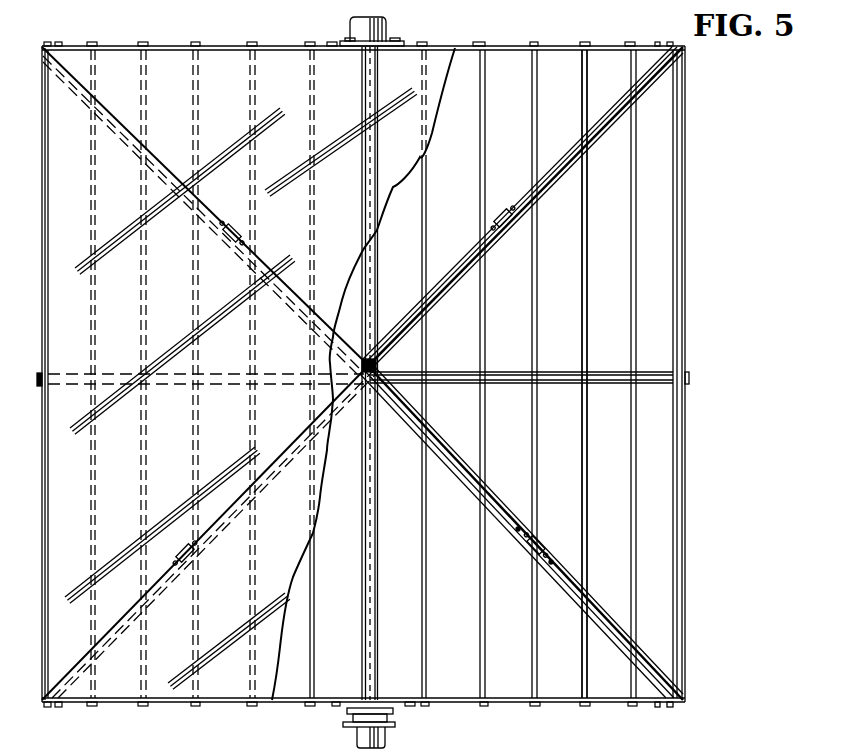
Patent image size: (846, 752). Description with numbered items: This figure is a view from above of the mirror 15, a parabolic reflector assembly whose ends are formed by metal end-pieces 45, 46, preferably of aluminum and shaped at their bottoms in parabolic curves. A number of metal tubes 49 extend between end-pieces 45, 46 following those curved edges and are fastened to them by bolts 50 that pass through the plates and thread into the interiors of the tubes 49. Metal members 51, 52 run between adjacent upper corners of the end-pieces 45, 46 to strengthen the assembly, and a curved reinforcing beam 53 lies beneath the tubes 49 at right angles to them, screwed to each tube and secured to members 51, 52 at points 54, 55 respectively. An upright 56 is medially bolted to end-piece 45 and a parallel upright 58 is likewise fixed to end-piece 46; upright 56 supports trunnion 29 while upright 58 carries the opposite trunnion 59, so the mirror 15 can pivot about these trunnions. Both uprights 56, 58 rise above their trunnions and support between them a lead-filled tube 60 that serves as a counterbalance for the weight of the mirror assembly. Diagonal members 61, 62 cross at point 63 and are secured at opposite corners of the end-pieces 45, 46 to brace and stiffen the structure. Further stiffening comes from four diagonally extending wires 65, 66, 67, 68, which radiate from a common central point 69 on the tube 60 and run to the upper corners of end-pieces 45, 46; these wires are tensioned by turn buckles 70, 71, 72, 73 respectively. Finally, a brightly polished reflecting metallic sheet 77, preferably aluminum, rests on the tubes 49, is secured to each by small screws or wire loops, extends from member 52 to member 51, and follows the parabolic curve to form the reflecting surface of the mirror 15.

The mirror 15 is at (600, 708).
The trunnion 29 is at (356, 736).
The metal end-piece 45 is at (507, 705).
The metal end-piece 46 is at (508, 47).
The metal tubes 49 is at (631, 258).
The bolts 50 is at (575, 705).
The metal member 51 is at (686, 458).
The metal member 52 is at (45, 303).
The curved reinforcing beam 53 is at (600, 371).
The securing point 54 is at (689, 376).
The securing point 55 is at (39, 380).
The upright 56 is at (410, 710).
The upright 58 is at (403, 44).
The trunnion 59 is at (349, 27).
The lead-filled tube 60 is at (378, 630).
The diagonal member 61 is at (453, 490).
The diagonal member 62 is at (446, 268).
The crossing point 63 is at (349, 410).
The diagonally extending wire 65 is at (213, 520).
The diagonally extending wire 66 is at (274, 270).
The diagonally extending wire 67 is at (549, 185).
The diagonally extending wire 68 is at (502, 512).
The common central point 69 is at (374, 357).
The turn buckle 70 is at (190, 547).
The turn buckle 71 is at (234, 225).
The turn buckle 72 is at (501, 208).
The turn buckle 73 is at (545, 540).
The reflecting metallic sheet 77 is at (180, 307).